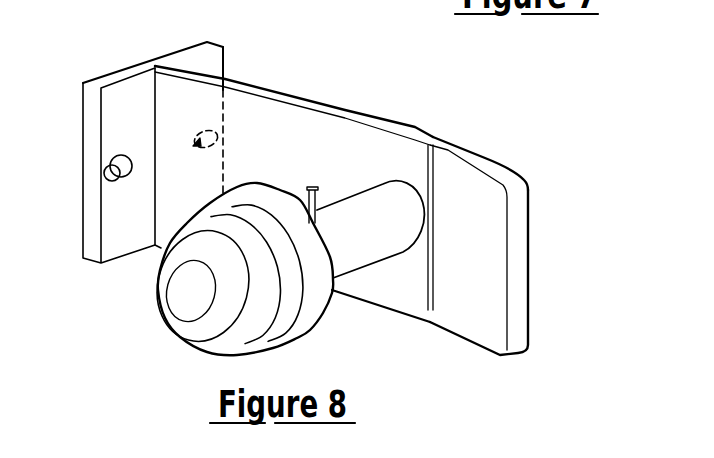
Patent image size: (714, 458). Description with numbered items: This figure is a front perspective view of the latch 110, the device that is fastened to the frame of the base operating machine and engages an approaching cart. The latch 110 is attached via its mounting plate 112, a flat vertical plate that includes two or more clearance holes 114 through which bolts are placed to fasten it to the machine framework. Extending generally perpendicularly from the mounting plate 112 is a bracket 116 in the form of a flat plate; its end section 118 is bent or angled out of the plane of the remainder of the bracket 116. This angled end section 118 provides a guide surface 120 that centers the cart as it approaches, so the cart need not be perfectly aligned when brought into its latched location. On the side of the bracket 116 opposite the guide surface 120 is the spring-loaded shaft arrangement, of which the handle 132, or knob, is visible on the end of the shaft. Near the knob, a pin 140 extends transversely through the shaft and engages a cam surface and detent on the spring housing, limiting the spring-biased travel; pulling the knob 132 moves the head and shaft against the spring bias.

The latch 110 is at (427, 98).
The mounting plate 112 is at (123, 97).
The clearance holes 114 is at (216, 126).
The bracket 116 is at (282, 116).
The end section 118 is at (521, 268).
The guide surface 120 is at (487, 157).
The handle 132 is at (162, 305).
The pin 140 is at (312, 185).